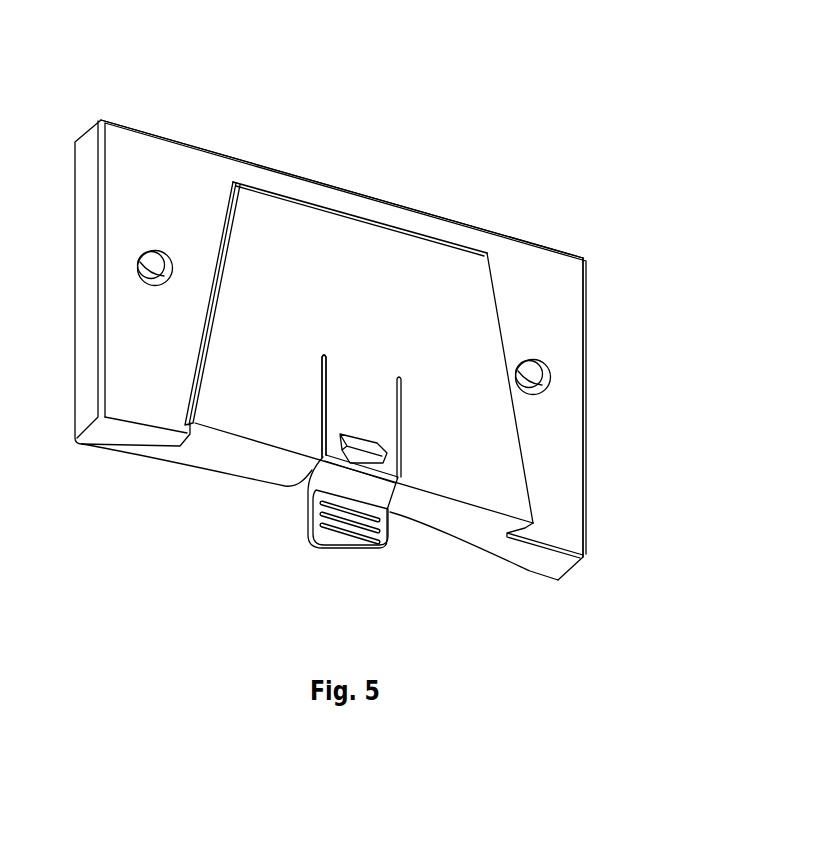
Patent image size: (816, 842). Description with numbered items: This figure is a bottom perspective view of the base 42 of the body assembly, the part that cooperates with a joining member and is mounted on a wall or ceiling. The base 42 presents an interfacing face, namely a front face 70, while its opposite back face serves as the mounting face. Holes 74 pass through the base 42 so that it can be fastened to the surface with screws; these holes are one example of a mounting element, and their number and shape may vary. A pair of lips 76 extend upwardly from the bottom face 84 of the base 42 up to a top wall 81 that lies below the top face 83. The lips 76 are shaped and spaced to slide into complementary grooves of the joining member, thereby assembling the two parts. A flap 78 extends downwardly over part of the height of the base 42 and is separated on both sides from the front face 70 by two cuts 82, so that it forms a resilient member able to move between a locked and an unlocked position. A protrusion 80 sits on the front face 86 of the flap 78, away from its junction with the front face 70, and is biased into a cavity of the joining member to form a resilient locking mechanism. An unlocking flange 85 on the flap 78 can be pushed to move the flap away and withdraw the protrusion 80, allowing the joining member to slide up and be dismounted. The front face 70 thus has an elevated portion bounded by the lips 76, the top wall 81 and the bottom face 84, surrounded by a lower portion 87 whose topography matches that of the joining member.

The base 42 is at (124, 52).
The front face 70 is at (417, 293).
The holes 74 is at (138, 268).
The lips 76 is at (190, 392).
The flap 78 is at (355, 403).
The protrusion 80 is at (358, 452).
The top wall 81 is at (391, 211).
The cuts 82 is at (398, 427).
The top face 83 is at (316, 166).
The bottom face 84 is at (140, 445).
The unlocking flange 85 is at (312, 515).
The front face of the flap 86 is at (355, 403).
The lower portion 87 is at (546, 273).